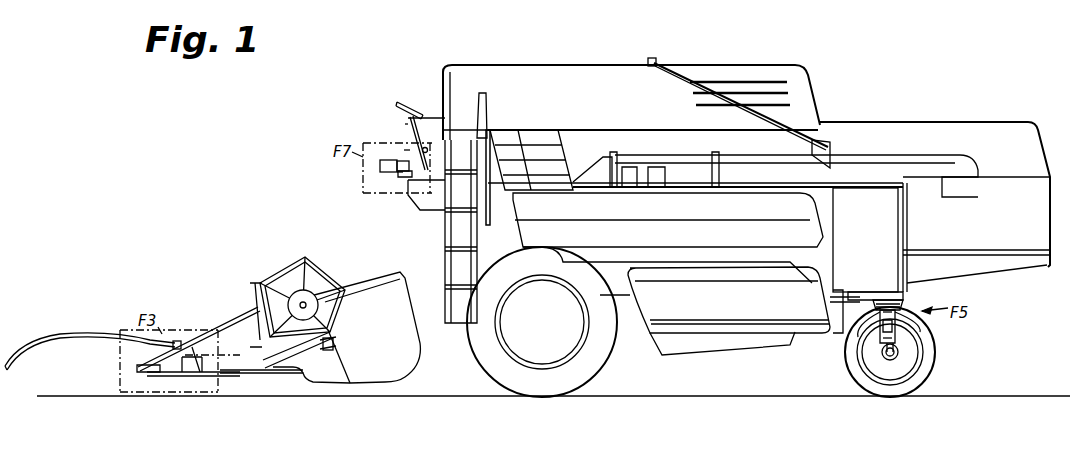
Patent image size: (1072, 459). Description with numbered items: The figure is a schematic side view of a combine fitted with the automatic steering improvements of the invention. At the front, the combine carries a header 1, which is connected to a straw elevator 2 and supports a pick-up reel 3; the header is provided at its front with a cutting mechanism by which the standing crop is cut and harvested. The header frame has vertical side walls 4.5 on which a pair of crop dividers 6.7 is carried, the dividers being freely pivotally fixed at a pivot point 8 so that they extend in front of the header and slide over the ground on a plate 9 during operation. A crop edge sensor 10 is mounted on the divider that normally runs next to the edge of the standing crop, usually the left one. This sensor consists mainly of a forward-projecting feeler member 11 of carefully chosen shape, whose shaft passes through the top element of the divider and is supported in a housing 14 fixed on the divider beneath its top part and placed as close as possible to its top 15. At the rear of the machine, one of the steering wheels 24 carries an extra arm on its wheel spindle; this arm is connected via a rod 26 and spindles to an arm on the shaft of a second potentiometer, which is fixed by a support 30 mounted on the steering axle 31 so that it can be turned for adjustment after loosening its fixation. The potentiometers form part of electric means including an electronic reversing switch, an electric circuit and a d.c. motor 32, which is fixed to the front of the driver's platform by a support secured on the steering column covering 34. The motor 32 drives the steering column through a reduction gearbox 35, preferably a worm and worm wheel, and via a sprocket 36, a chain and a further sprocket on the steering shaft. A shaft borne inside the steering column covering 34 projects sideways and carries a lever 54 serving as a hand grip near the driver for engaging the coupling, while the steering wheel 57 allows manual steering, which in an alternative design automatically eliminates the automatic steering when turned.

The header 1 is at (391, 372).
The straw elevator 2 is at (466, 348).
The pick-up reel 3 is at (278, 244).
The vertical side walls 4.5 is at (320, 378).
The crop dividers 6.7 is at (231, 323).
The pivot point 8 is at (332, 346).
The plate 9 is at (153, 378).
The crop edge sensor 10 is at (56, 334).
The feeler member 11 is at (45, 344).
The housing 14 is at (181, 378).
The top 15 is at (140, 371).
The steering wheel 24 is at (903, 392).
The rod 26 is at (862, 337).
The support 30 is at (905, 314).
The steering axle 31 is at (898, 343).
The d.c. motor 32 is at (380, 168).
The steering column covering 34 is at (410, 121).
The reduction gearbox 35 is at (407, 150).
The sprocket 36 is at (401, 181).
The lever 54 is at (426, 150).
The steering wheel 57 is at (401, 101).